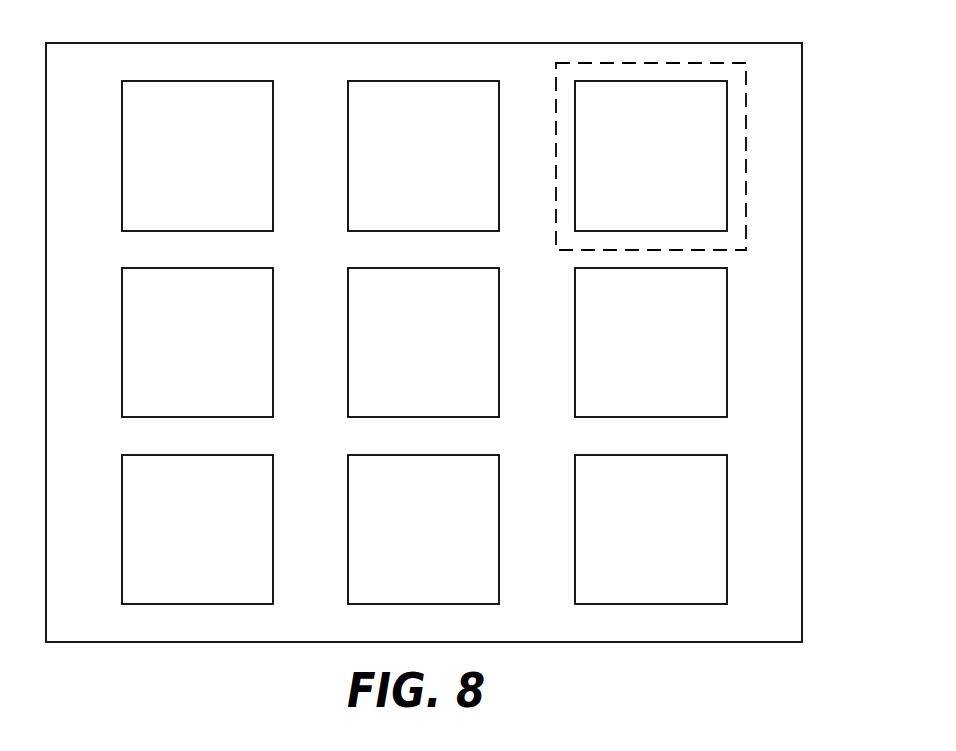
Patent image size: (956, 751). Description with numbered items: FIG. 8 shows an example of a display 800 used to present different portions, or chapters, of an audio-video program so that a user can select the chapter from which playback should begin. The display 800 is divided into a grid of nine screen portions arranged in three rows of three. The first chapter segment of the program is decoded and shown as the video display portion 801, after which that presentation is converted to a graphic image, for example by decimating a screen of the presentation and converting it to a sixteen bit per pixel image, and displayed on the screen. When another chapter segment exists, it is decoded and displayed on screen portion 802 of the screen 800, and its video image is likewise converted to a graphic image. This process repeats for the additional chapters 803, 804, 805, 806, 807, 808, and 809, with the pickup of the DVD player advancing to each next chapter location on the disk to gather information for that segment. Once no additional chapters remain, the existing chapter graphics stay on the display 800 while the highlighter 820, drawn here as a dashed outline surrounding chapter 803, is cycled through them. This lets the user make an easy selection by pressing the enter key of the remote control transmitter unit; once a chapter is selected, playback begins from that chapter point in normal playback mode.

The display 800 is at (528, 45).
The video display portion 801 is at (178, 81).
The screen portion 802 is at (402, 81).
The additional chapter 803 is at (727, 122).
The additional chapter 804 is at (197, 268).
The additional chapter 805 is at (413, 268).
The additional chapter 806 is at (727, 319).
The additional chapter 807 is at (197, 455).
The additional chapter 808 is at (413, 455).
The additional chapter 809 is at (727, 489).
The highlighter 820 is at (746, 178).